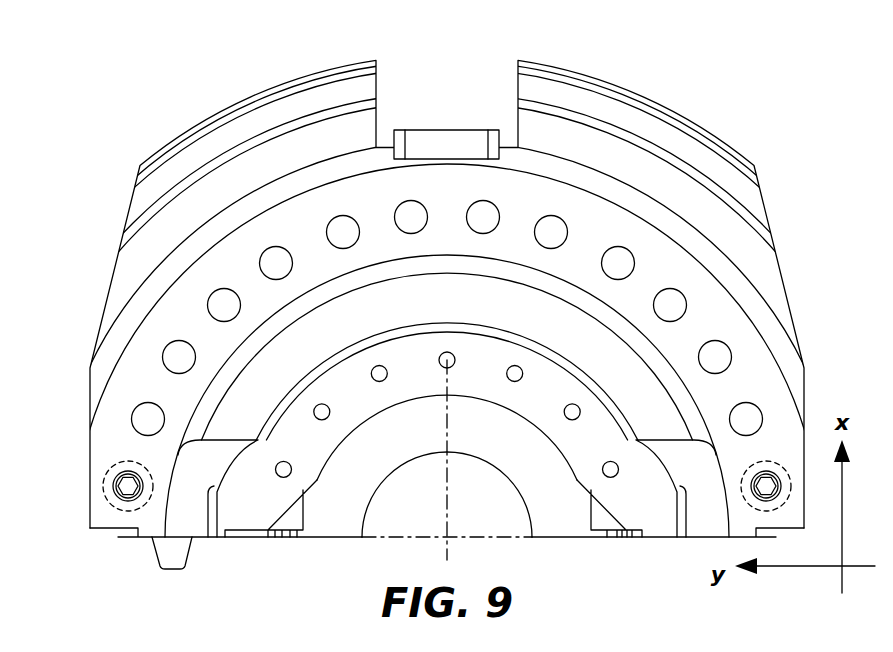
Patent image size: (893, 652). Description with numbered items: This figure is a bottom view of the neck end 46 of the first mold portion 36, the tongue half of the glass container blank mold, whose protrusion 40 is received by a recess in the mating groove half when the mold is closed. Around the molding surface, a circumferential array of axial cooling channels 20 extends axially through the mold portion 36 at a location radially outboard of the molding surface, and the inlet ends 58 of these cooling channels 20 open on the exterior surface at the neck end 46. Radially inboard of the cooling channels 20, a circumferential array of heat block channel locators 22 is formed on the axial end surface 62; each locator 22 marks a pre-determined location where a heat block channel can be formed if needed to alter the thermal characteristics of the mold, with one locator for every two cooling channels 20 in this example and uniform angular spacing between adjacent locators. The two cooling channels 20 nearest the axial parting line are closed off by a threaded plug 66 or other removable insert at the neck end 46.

The first mold portion 36 is at (86, 131).
The axial cooling channels 20 is at (263, 251).
The inlet ends 58 is at (551, 214).
The neck end 46 is at (155, 323).
The axial end surface 62 is at (500, 395).
The heat block channel locators 22 is at (323, 414).
The threaded plug 66 is at (125, 486).
The protrusion 40 is at (155, 540).